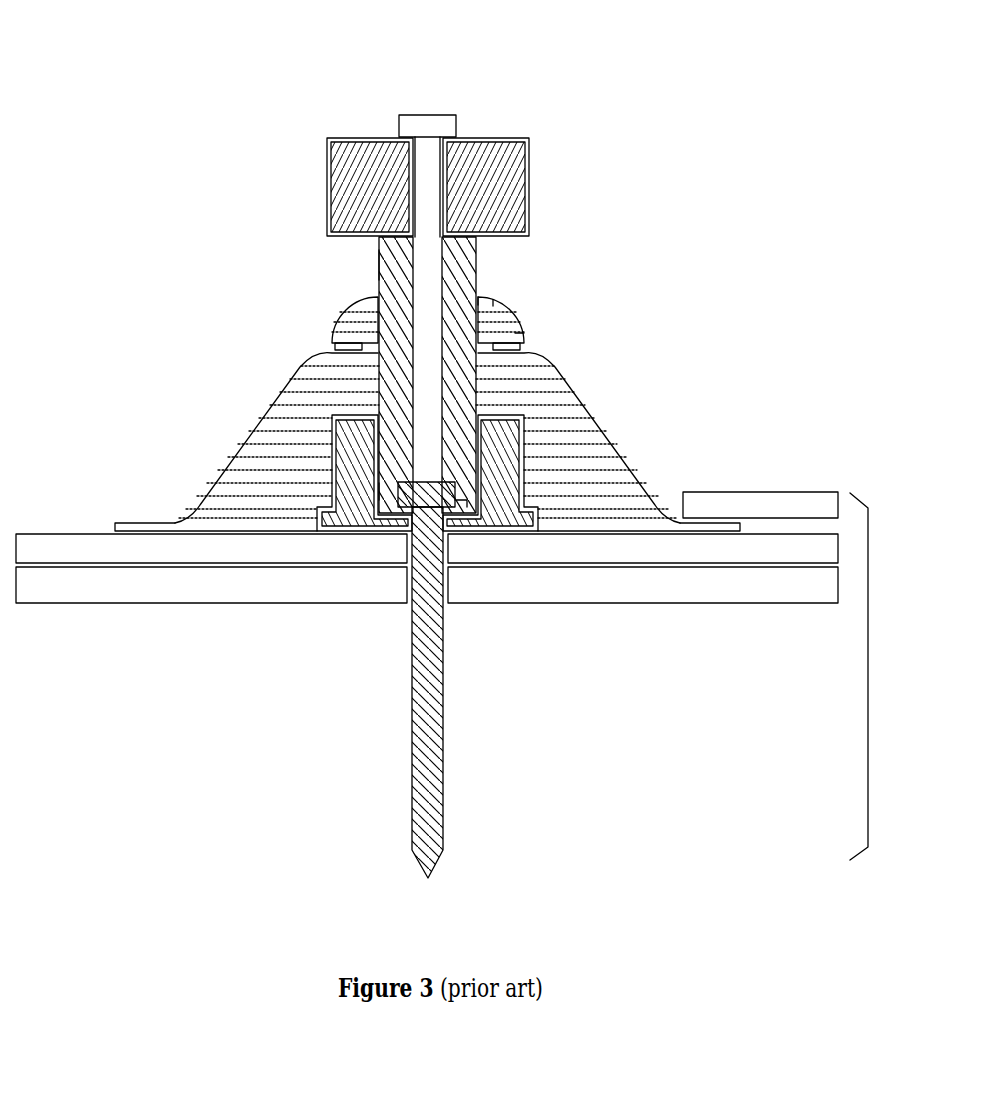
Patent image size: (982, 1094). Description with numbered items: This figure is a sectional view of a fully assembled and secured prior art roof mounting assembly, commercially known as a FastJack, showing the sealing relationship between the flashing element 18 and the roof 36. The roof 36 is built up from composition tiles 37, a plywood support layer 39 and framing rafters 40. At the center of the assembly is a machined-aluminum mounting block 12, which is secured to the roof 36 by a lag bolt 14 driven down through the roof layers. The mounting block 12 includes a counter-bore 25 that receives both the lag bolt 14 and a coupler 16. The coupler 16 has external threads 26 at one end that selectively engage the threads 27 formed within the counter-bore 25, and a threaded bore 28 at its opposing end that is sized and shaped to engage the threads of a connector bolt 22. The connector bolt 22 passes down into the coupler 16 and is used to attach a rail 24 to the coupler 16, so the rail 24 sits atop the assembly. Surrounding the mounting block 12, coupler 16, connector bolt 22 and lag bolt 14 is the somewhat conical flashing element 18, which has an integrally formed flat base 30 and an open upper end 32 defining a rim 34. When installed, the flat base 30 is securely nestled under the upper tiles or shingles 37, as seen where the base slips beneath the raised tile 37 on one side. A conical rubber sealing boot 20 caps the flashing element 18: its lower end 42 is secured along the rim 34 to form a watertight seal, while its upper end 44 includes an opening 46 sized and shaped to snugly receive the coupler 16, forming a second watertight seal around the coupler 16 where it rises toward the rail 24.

The mounting block 12 is at (427, 473).
The lag bolt 14 is at (445, 817).
The coupler 16 is at (427, 375).
The flashing element 18 is at (663, 406).
The rubber sealing boot 20 is at (428, 320).
The connector bolt 22 is at (427, 130).
The rail 24 is at (428, 187).
The counter-bore 25 is at (388, 522).
The external threads 26 is at (467, 503).
The threads 27 is at (375, 483).
The threaded bore 28 is at (407, 263).
The flat base 30 is at (141, 523).
The open upper end 32 is at (525, 352).
The rim 34 is at (335, 348).
The roof 36 is at (872, 676).
The composition tiles 37 is at (427, 527).
The support layer 39 is at (427, 585).
The framing rafters 40 is at (775, 637).
The lower end 42 is at (520, 333).
The upper end 44 is at (493, 301).
The opening 46 is at (478, 292).